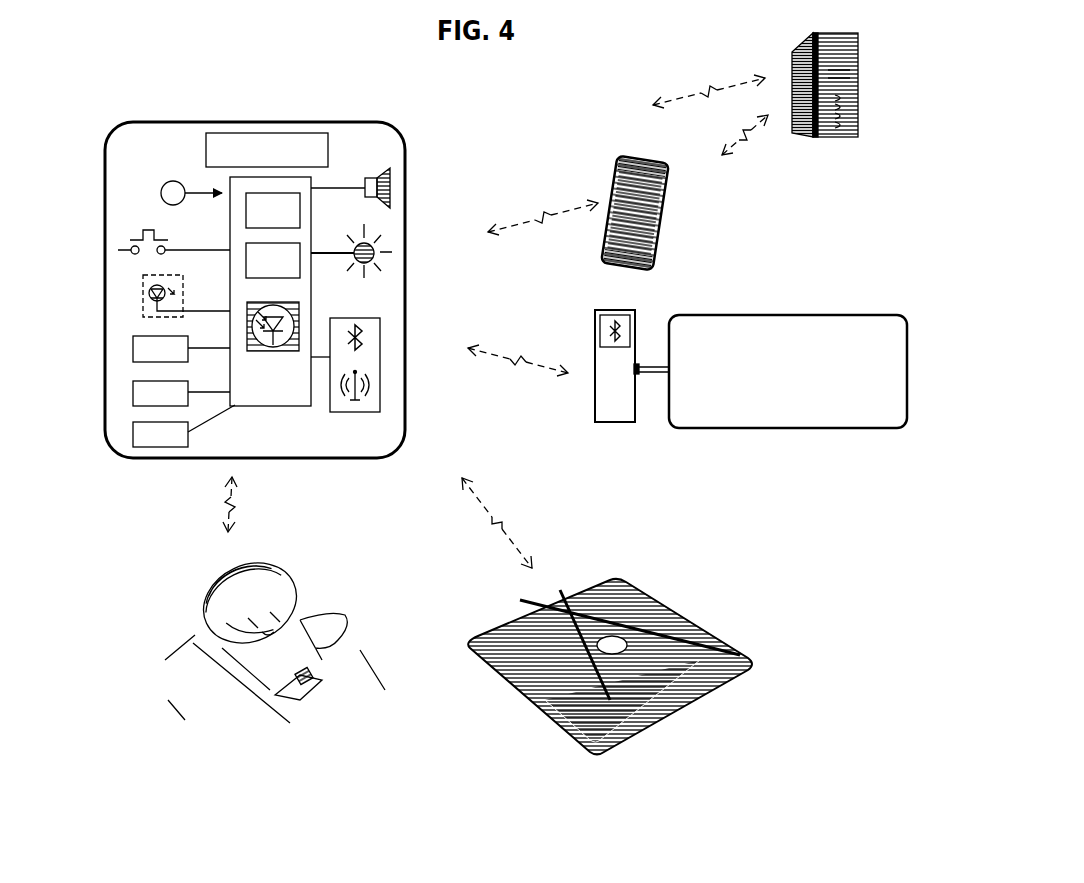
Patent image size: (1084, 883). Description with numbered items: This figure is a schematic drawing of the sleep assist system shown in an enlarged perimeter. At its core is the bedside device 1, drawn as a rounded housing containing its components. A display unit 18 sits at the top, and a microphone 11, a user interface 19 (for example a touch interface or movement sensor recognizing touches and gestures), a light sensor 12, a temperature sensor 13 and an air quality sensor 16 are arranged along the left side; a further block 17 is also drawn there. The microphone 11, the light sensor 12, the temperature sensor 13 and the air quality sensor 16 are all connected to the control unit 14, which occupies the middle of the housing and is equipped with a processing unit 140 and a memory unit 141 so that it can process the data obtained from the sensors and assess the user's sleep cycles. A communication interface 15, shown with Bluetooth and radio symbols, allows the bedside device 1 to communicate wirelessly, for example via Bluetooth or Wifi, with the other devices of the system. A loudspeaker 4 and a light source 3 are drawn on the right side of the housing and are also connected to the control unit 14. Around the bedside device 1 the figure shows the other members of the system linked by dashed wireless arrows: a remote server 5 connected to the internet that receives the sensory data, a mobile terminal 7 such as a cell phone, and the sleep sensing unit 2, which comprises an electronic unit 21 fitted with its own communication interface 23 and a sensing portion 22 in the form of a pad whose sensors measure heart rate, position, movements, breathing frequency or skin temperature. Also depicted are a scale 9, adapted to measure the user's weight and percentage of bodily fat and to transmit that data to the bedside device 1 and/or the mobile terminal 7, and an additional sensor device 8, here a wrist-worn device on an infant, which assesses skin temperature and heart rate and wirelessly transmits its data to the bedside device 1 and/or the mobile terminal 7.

The bedside device 1 is at (261, 118).
The display unit 18 is at (221, 132).
The microphone 11 is at (160, 172).
The user interface 19 is at (127, 237).
The light sensor 12 is at (140, 287).
The temperature sensor 13 is at (133, 340).
The air quality sensor 16 is at (133, 386).
The battery 17 is at (133, 431).
The control unit 14 is at (283, 406).
The processing unit 140 is at (293, 224).
The memory unit 141 is at (293, 274).
The communication interface 15 is at (345, 379).
The loudspeaker 4 is at (388, 189).
The light source 3 is at (385, 258).
The remote server 5 is at (856, 142).
The mobile terminal 7 is at (664, 215).
The sleep sensing unit 2 is at (711, 410).
The electronic unit 21 is at (618, 426).
The sensing portion 22 is at (789, 434).
The communication interface 23 is at (597, 319).
The scale 9 is at (700, 614).
The additional sensor device 8 is at (308, 685).